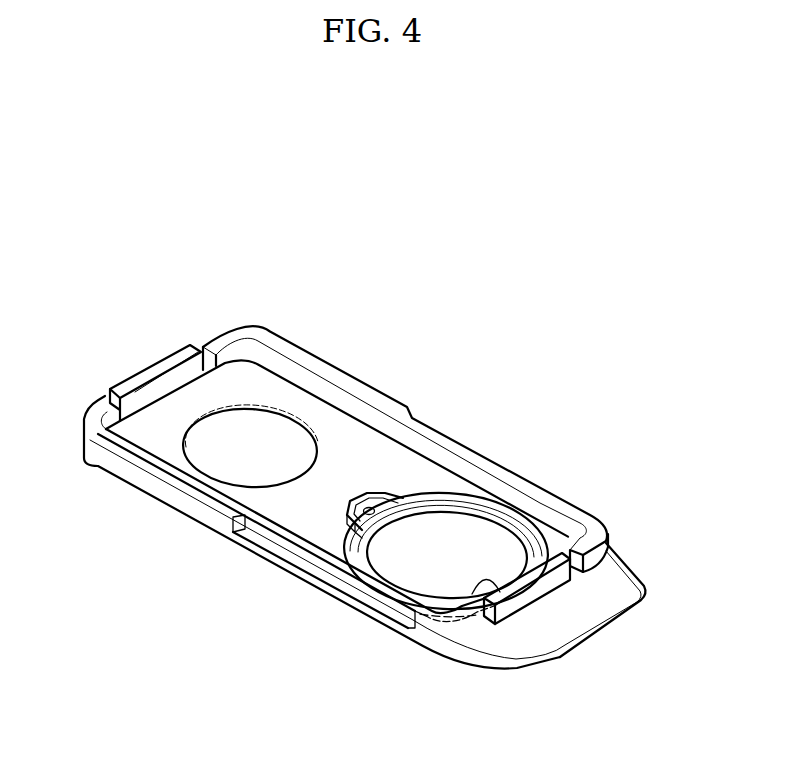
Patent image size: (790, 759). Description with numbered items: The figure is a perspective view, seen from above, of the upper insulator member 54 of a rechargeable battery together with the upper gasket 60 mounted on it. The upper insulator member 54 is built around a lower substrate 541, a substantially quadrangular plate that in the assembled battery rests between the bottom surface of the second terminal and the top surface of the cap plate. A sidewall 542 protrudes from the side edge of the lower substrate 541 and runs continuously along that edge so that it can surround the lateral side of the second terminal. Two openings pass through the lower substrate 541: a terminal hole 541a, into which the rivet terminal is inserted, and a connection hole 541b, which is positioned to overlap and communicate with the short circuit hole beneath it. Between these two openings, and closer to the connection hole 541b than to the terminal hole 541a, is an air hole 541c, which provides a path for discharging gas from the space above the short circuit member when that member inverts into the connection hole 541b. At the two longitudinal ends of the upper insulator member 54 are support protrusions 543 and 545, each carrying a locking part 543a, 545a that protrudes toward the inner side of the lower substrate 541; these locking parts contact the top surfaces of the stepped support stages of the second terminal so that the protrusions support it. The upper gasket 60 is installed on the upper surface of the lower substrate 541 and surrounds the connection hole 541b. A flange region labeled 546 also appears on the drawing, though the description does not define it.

The upper insulator member 54 is at (218, 282).
The lower substrate 541 is at (255, 388).
The terminal hole 541a is at (287, 415).
The connection hole 541b is at (425, 530).
The air hole 541c is at (345, 515).
The sidewall 542 is at (153, 488).
The support protrusion 543 is at (170, 360).
The locking part 543a is at (145, 392).
The support protrusion 545 is at (537, 578).
The locking part 545a is at (498, 585).
The extension flange 546 is at (605, 598).
The upper gasket 60 is at (528, 507).